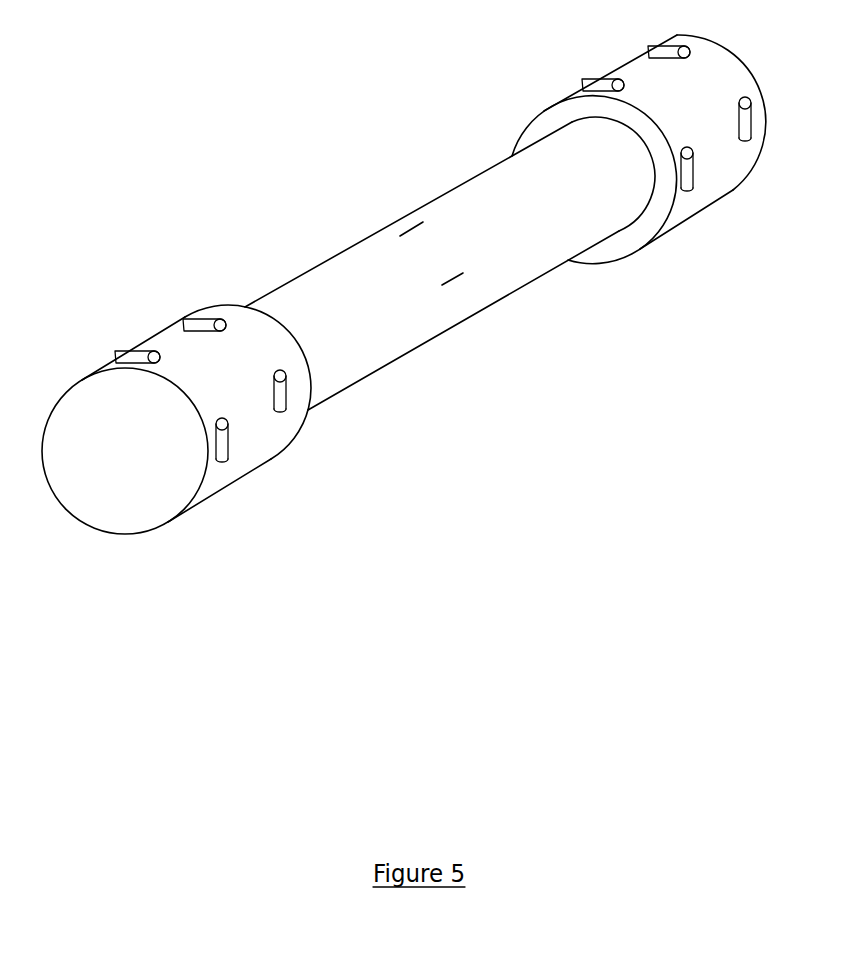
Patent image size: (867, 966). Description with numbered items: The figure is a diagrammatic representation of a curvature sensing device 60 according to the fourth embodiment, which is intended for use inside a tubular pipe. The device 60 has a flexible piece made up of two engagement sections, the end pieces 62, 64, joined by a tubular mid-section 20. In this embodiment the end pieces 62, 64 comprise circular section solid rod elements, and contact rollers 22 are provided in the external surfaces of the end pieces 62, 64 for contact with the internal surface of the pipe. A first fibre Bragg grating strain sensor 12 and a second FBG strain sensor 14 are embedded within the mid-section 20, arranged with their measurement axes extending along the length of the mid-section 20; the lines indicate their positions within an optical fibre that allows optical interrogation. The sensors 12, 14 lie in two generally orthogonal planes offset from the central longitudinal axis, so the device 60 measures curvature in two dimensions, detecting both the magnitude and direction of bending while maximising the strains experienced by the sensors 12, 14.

The first fibre Bragg grating strain sensor 12 is at (411, 226).
The second FBG strain sensor 14 is at (455, 277).
The tubular mid-section 20 is at (495, 187).
The contact roller 22 is at (130, 355).
The curvature sensing device 60 is at (462, 445).
The end piece 62 is at (229, 474).
The end piece 64 is at (735, 190).